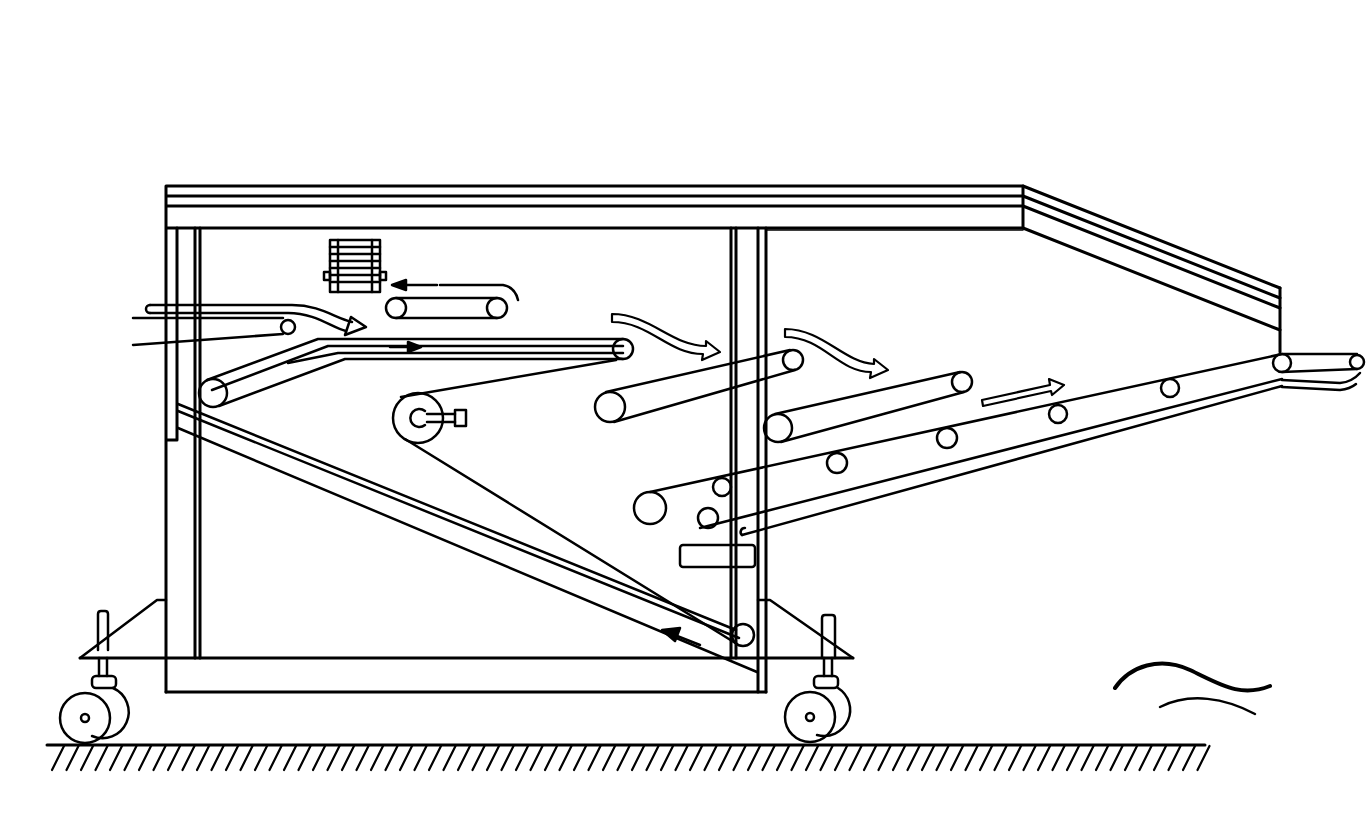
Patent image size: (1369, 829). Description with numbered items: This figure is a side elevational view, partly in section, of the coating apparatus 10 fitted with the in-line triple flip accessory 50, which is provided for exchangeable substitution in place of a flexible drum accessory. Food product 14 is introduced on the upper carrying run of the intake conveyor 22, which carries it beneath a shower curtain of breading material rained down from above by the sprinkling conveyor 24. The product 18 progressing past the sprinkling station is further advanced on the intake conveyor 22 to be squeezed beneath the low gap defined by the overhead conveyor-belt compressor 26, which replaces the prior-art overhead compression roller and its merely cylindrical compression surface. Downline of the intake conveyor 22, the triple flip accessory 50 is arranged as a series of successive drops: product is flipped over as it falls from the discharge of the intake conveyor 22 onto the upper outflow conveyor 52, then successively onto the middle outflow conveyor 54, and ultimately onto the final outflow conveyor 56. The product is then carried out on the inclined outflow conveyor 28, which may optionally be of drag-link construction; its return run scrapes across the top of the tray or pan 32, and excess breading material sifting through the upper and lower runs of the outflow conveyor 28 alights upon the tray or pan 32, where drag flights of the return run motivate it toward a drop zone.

The coating apparatus 10 is at (238, 117).
The food product 14 is at (218, 305).
The product 18 is at (660, 330).
The intake conveyor 22 is at (270, 435).
The sprinkling conveyor 24 is at (326, 258).
The overhead conveyor-belt compressor 26 is at (510, 318).
The inclined outflow conveyor 28 is at (999, 436).
The tray or pan 32 is at (968, 478).
The in-line triple flip accessory 50 is at (960, 302).
The upper outflow conveyor 52 is at (701, 397).
The middle outflow conveyor 54 is at (926, 382).
The final outflow conveyor 56 is at (1225, 366).